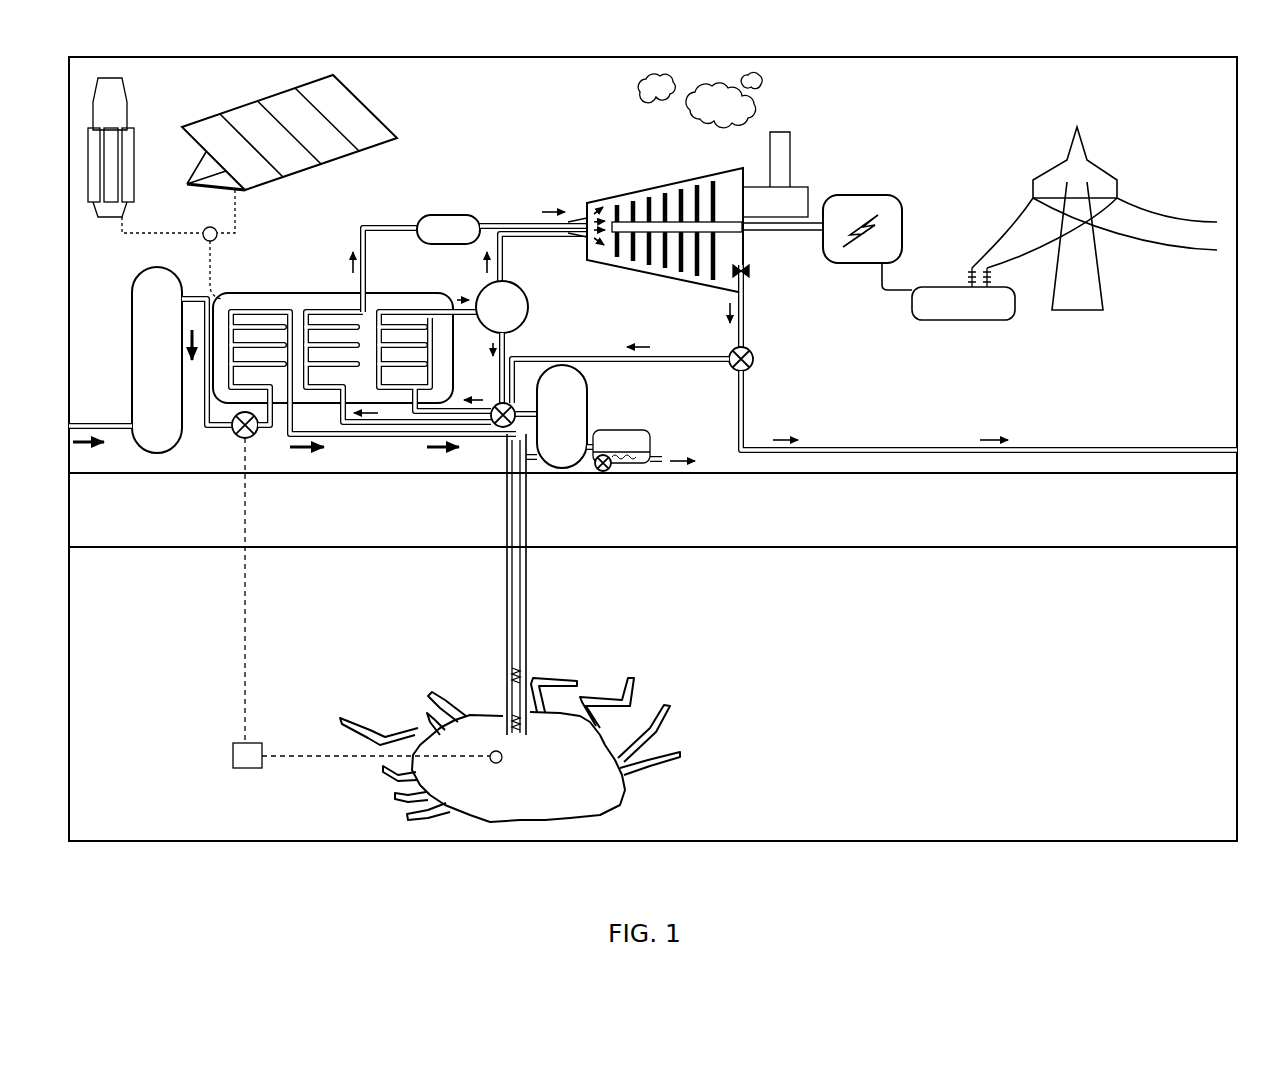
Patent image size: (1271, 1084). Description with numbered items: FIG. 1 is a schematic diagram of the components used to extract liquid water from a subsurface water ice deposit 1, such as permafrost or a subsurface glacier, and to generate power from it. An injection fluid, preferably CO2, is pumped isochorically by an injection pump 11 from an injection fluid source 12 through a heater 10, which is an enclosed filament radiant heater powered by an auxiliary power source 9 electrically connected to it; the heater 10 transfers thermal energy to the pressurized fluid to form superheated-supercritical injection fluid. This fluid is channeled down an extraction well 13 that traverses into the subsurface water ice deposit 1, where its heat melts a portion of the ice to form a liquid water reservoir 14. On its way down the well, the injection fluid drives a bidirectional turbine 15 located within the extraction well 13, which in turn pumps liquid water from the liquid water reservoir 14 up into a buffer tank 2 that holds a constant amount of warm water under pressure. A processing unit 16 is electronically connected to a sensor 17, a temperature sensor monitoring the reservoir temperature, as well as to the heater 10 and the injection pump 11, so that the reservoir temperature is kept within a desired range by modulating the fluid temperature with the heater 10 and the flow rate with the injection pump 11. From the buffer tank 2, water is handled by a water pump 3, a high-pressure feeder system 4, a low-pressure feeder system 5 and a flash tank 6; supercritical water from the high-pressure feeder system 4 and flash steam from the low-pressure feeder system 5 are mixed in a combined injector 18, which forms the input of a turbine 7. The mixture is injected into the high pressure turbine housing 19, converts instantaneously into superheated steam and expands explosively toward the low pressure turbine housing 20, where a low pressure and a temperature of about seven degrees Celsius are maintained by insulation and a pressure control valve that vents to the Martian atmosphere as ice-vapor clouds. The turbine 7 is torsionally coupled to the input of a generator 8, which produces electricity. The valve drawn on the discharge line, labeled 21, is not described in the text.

The subsurface water ice deposit 1 is at (358, 652).
The buffer tank 2 is at (566, 450).
The water pump 3 is at (516, 410).
The high-pressure feeder system 4 is at (382, 199).
The low-pressure feeder system 5 is at (446, 268).
The flash tank 6 is at (513, 305).
The turbine 7 is at (668, 190).
The generator 8 is at (893, 195).
The auxiliary power source 9 is at (142, 79).
The heater 10 is at (300, 296).
The injection pump 11 is at (240, 438).
The injection fluid source 12 is at (138, 290).
The extraction well 13 is at (528, 620).
The liquid water reservoir 14 is at (597, 796).
The bidirectional turbine 15 is at (512, 692).
The processing unit 16 is at (233, 752).
The sensor 17 is at (500, 763).
The combined injector 18 is at (587, 224).
The high pressure turbine housing 19 is at (600, 187).
The low pressure turbine housing 20 is at (727, 163).
The exhaust valve 21 is at (755, 271).